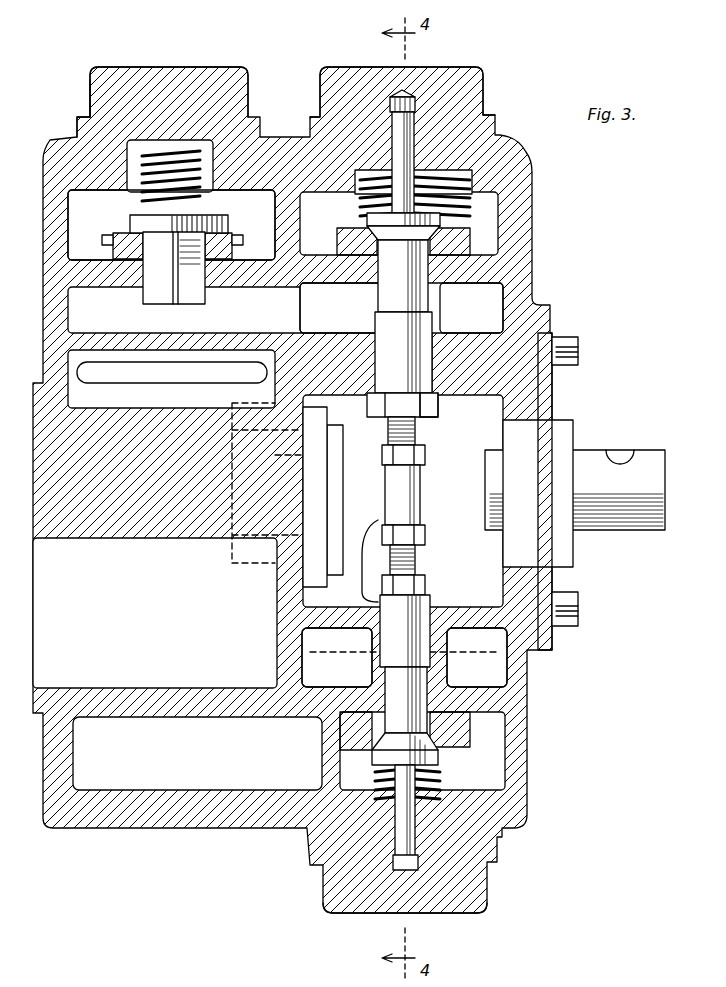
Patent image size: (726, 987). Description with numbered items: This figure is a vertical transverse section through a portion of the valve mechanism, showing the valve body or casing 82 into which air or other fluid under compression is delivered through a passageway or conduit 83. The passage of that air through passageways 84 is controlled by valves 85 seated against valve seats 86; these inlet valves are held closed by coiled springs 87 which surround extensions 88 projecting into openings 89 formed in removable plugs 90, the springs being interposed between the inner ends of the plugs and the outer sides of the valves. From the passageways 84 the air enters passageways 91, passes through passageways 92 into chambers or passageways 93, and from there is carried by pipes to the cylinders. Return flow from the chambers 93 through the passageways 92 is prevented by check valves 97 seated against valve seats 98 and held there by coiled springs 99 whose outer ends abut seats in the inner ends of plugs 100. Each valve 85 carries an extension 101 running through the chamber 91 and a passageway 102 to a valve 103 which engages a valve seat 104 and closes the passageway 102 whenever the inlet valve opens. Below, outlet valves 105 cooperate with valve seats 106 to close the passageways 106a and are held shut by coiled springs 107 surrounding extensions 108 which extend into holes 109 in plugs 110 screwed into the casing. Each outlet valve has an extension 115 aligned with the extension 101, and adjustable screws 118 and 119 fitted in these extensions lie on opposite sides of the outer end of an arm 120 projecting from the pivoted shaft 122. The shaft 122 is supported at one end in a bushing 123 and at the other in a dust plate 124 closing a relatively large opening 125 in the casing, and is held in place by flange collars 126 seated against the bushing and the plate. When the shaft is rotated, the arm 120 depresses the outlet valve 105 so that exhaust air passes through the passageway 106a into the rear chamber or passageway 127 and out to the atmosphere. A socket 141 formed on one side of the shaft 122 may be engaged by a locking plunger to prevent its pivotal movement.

The valve body or casing 82 is at (533, 200).
The passageway or conduit 83 is at (368, 219).
The passageways 84 is at (428, 280).
The valves 85 is at (372, 203).
The valve seats 86 is at (436, 224).
The coiled springs 87 is at (421, 206).
The extensions 88 is at (415, 136).
The openings 89 is at (418, 108).
The removable plugs 90 is at (466, 74).
The passageways 91 is at (471, 308).
The passageways 92 is at (142, 283).
The chambers or passageways 93 is at (171, 225).
The check valves 97 is at (208, 222).
The valve seats 98 is at (236, 240).
The coiled springs 99 is at (90, 82).
The plugs 100 is at (170, 70).
The extensions 101 is at (380, 296).
The passageways 102 is at (435, 338).
The valves 103 is at (440, 401).
The valve seats 104 is at (368, 397).
The outlet valves 105 is at (372, 759).
The valve seats 106 is at (450, 744).
The passageways 106a is at (383, 719).
The coiled springs 107 is at (430, 782).
The extensions 108 is at (420, 846).
The holes 109 is at (420, 872).
The plugs 110 is at (455, 912).
The extensions 115 is at (428, 673).
The adjustable screw 118 is at (415, 438).
The adjustable screw 119 is at (417, 563).
The arm 120 is at (412, 485).
The pivoted shaft 122 is at (592, 462).
The bushing 123 is at (328, 586).
The dust plate 124 is at (560, 434).
The opening 125 is at (515, 592).
The flange collars 126 is at (343, 440).
The rear chamber or passageway 127 is at (337, 657).
The socket 141 is at (362, 584).